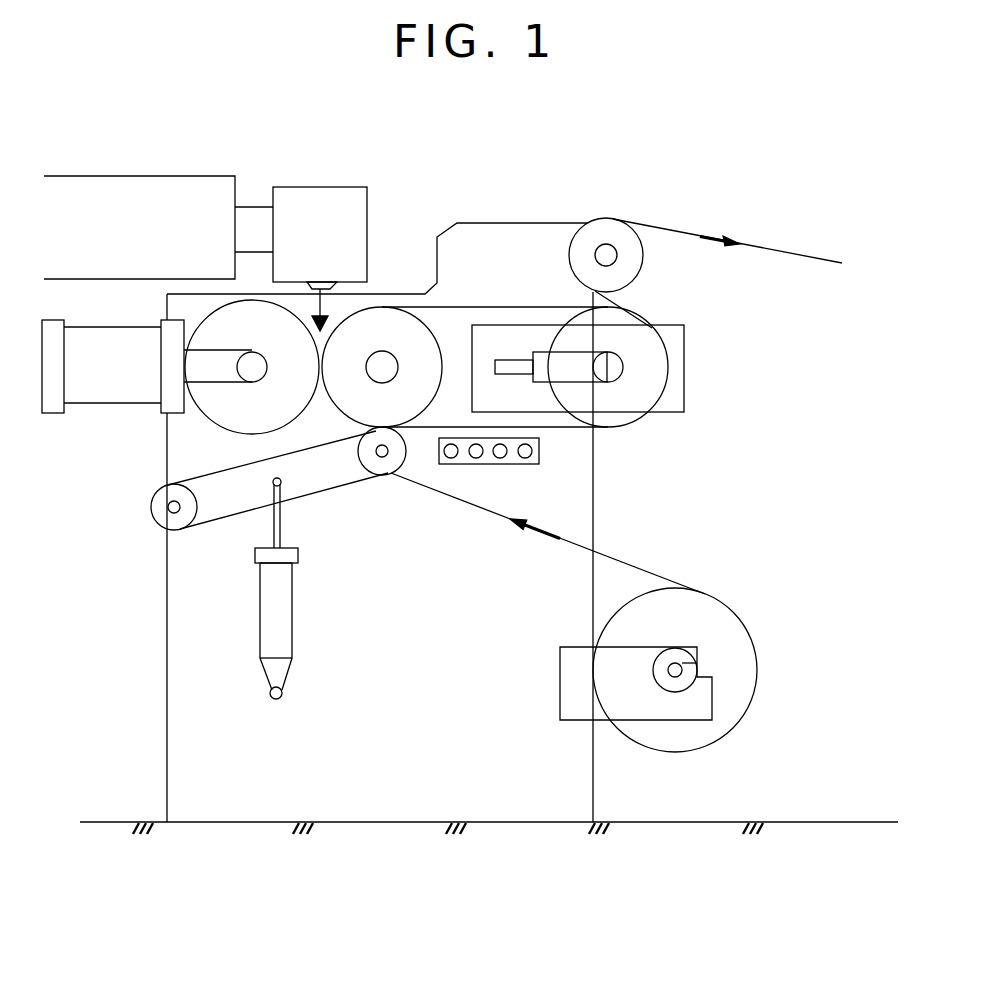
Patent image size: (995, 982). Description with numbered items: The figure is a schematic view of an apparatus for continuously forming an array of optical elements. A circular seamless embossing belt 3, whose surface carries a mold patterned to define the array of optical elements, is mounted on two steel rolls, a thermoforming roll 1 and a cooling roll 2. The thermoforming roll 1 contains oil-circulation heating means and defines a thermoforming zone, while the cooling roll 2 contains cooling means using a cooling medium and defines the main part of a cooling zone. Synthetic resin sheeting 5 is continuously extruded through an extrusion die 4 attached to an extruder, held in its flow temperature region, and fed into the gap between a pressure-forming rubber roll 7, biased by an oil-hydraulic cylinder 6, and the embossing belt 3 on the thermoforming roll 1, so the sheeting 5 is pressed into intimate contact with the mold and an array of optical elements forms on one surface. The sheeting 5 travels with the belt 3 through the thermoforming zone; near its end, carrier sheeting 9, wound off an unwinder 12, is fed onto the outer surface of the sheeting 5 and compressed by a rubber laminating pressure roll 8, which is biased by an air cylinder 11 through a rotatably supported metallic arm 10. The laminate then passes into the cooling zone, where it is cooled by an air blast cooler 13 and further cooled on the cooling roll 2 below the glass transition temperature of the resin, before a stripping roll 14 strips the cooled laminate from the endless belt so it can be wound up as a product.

The thermoforming roll 1 is at (386, 334).
The cooling roll 2 is at (640, 367).
The seamless embossing belt 3 is at (462, 310).
The extrusion die 4 is at (324, 227).
The synthetic resin sheeting 5 is at (320, 303).
The oil-hydraulic cylinder 6 is at (123, 394).
The pressure-forming rubber roll 7 is at (230, 402).
The laminating pressure roll 8 is at (380, 463).
The carrier sheeting 9 is at (638, 568).
The metallic arm 10 is at (307, 473).
The air cylinder 11 is at (283, 615).
The unwinder 12 is at (710, 643).
The air blast cooler 13 is at (490, 458).
The stripping roll 14 is at (608, 235).